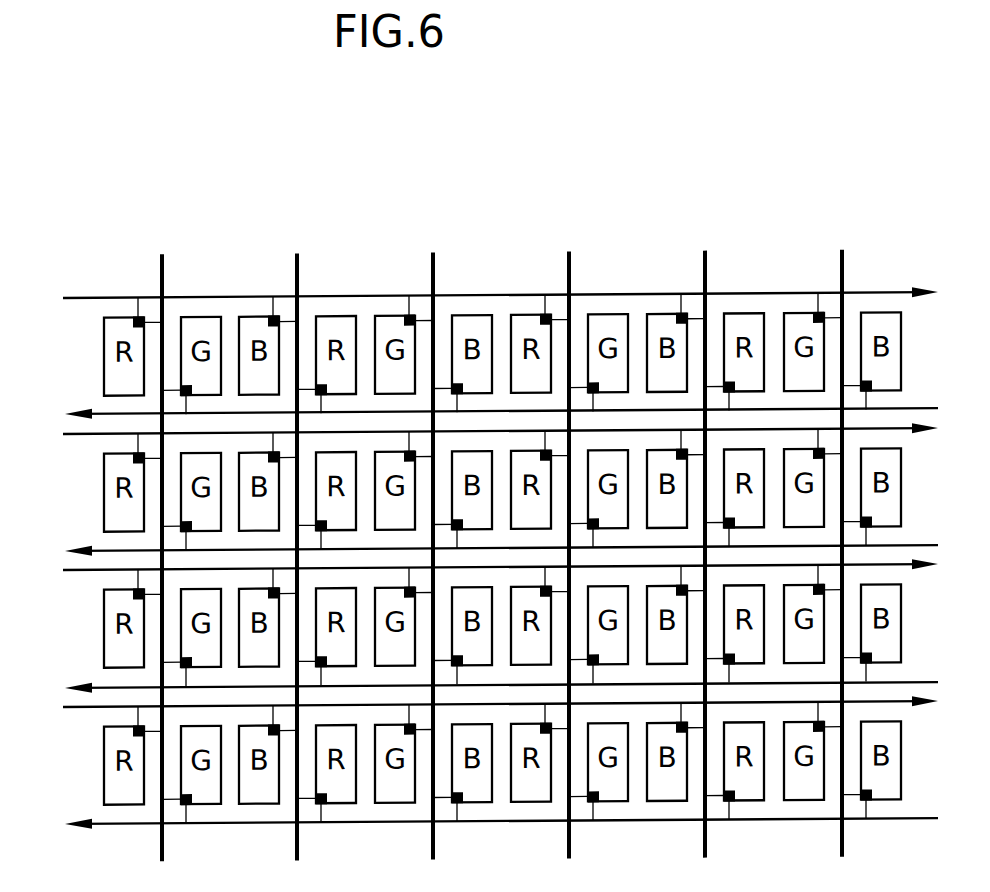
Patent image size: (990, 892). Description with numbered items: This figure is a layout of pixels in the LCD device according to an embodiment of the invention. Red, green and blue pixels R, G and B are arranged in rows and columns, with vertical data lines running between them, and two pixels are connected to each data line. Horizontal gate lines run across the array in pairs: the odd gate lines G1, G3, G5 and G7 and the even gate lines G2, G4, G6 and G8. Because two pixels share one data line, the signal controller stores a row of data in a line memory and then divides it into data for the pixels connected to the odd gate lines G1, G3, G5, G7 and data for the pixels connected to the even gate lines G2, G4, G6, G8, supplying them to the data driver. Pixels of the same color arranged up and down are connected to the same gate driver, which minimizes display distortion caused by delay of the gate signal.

The odd gate line G1 is at (483, 297).
The even gate line G2 is at (517, 413).
The odd gate line G3 is at (483, 433).
The even gate line G4 is at (517, 550).
The odd gate line G5 is at (483, 569).
The even gate line G6 is at (517, 687).
The odd gate line G7 is at (483, 706).
The even gate line G8 is at (517, 823).